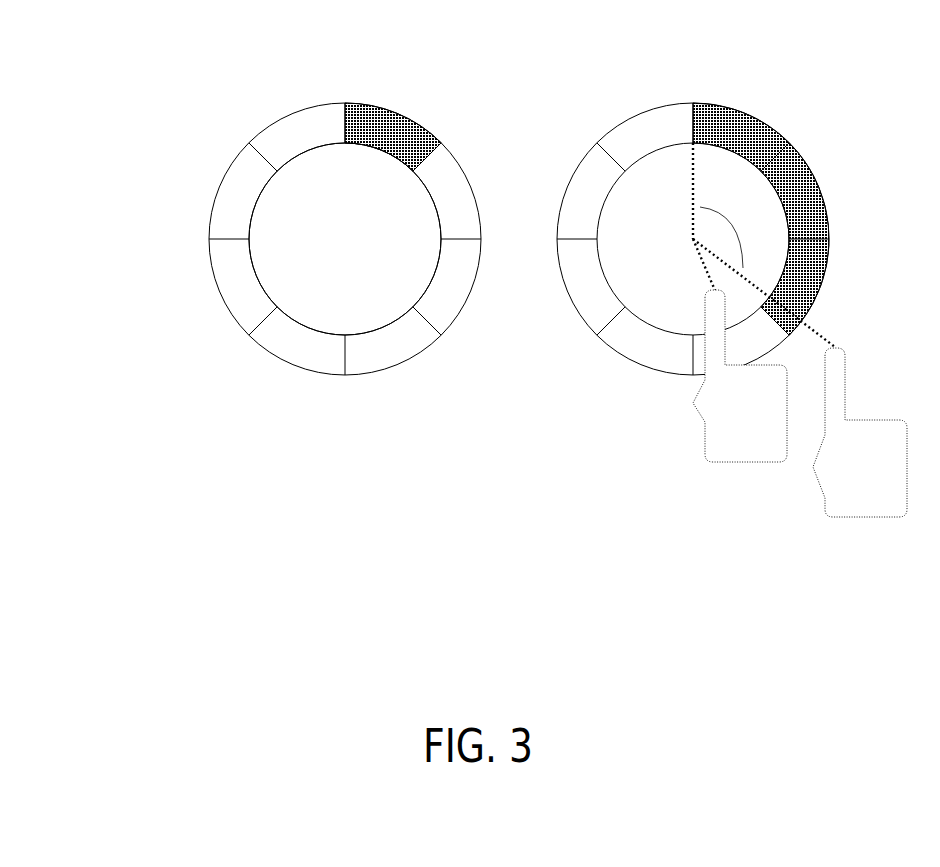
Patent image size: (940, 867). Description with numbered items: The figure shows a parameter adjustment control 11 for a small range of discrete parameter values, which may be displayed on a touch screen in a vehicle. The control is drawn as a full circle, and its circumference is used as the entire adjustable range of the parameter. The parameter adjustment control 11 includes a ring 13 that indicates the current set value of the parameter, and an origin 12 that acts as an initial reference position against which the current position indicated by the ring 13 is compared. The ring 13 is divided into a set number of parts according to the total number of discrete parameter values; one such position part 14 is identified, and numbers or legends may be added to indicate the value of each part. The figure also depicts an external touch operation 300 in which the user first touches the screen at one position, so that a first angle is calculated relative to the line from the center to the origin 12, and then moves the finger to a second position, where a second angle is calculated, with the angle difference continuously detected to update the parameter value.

The external touch operation 300 is at (627, 53).
The parameter adjustment control 11 is at (209, 228).
The origin 12 is at (345, 130).
The ring 13 is at (410, 167).
The position part 14 is at (429, 285).